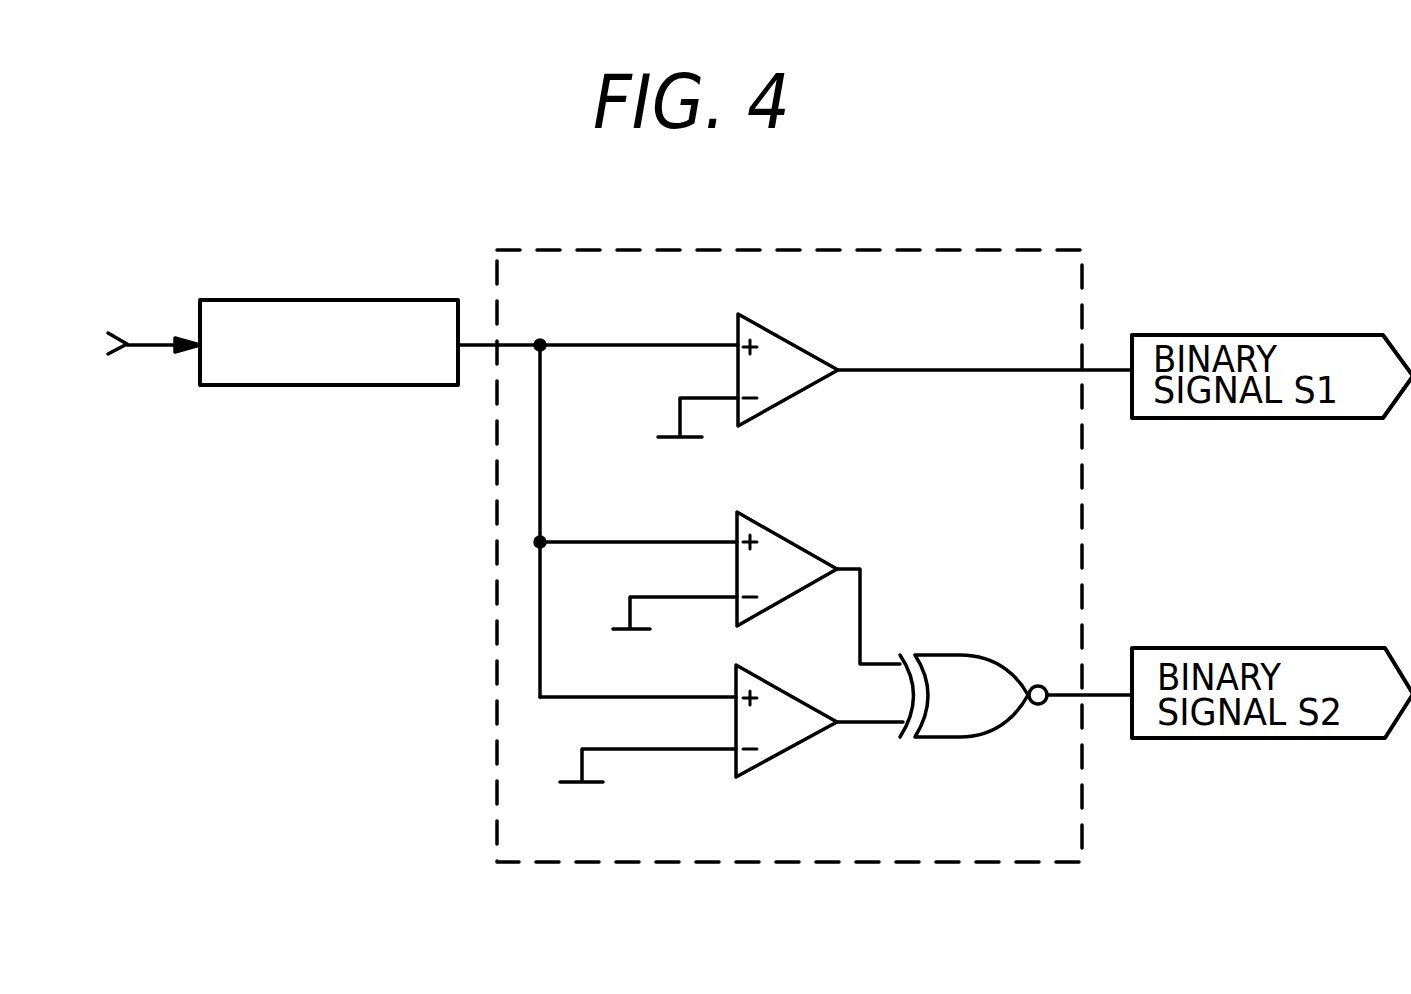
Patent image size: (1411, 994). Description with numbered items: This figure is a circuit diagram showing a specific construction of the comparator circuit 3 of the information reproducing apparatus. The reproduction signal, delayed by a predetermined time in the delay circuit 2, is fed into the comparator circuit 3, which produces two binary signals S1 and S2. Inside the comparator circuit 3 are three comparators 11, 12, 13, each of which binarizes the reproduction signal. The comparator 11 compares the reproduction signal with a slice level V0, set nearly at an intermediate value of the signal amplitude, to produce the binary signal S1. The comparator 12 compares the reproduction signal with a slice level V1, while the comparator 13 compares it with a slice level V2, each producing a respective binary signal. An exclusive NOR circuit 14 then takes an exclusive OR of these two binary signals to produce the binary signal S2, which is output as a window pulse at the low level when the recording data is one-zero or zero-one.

The delay circuit 2 is at (403, 298).
The comparator circuit 3 is at (967, 250).
The comparator 11 is at (805, 392).
The comparator 12 is at (777, 531).
The comparator 13 is at (792, 667).
The exclusive NOR circuit 14 is at (963, 652).